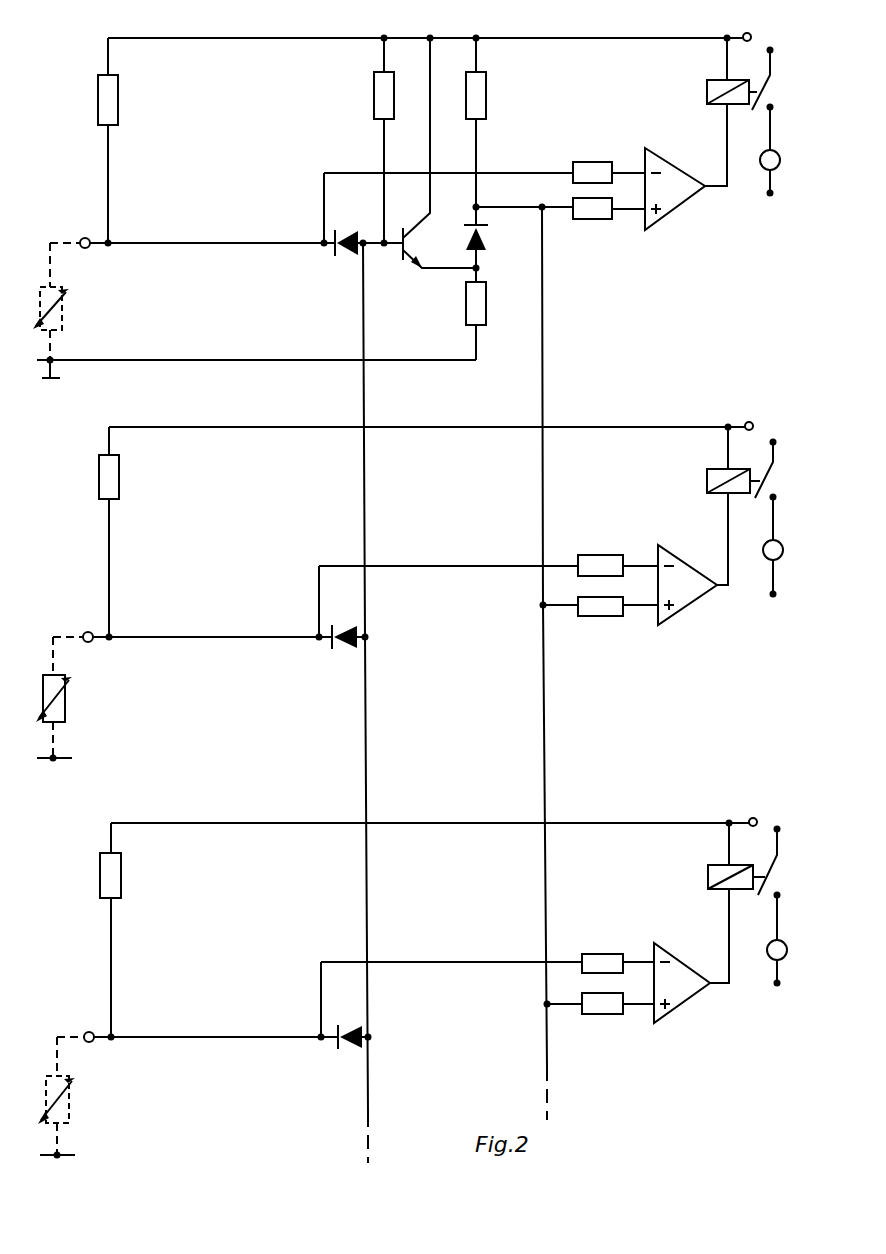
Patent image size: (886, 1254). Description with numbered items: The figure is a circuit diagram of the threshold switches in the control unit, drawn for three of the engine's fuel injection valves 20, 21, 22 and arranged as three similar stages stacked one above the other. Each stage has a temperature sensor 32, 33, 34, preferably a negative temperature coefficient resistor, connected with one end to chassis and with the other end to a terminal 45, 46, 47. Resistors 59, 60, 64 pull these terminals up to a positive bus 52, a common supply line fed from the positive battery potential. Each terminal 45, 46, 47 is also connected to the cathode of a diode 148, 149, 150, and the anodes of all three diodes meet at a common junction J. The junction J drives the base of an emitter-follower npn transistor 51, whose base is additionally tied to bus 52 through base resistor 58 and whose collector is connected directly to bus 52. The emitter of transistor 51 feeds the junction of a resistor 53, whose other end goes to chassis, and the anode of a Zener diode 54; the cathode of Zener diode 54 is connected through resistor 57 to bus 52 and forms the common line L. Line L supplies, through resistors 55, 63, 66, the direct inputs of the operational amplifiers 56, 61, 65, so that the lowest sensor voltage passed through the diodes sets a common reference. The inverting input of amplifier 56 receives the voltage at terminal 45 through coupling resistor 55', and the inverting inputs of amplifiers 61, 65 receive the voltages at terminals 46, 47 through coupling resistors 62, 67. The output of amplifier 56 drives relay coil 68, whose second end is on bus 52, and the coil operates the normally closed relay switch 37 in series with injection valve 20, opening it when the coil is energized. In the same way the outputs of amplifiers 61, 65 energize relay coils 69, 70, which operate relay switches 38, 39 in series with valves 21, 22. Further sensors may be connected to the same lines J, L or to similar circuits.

The fuel injection valve 20 is at (779, 163).
The fuel injection valve 21 is at (782, 552).
The fuel injection valve 22 is at (786, 952).
The temperature sensor 32 is at (64, 318).
The temperature sensor 33 is at (66, 708).
The temperature sensor 34 is at (65, 1105).
The relay switch 37 is at (761, 105).
The relay switch 38 is at (764, 497).
The relay switch 39 is at (767, 895).
The terminal 45 is at (85, 237).
The terminal 46 is at (87, 631).
The terminal 47 is at (88, 1031).
The npn transistor 51 is at (421, 273).
The positive bus 52 is at (565, 40).
The resistor 53 is at (482, 300).
The Zener diode 54 is at (487, 245).
The resistor 55 is at (609, 231).
The coupling resistor 55' is at (606, 146).
The operational amplifier 56 is at (671, 188).
The resistor 57 is at (482, 105).
The base resistor 58 is at (380, 105).
The resistor 59 is at (112, 100).
The resistor 60 is at (115, 478).
The operational amplifier 61 is at (684, 590).
The coupling resistor 62 is at (615, 562).
The resistor 63 is at (606, 614).
The resistor 64 is at (116, 870).
The operational amplifier 65 is at (682, 985).
The resistor 66 is at (598, 1016).
The coupling resistor 67 is at (607, 958).
The relay coil 68 is at (707, 90).
The relay coil 69 is at (707, 478).
The relay coil 70 is at (712, 870).
The diode 148 is at (348, 260).
The diode 149 is at (348, 650).
The diode 150 is at (348, 1047).
The common junction J is at (368, 634).
The common line L is at (541, 605).